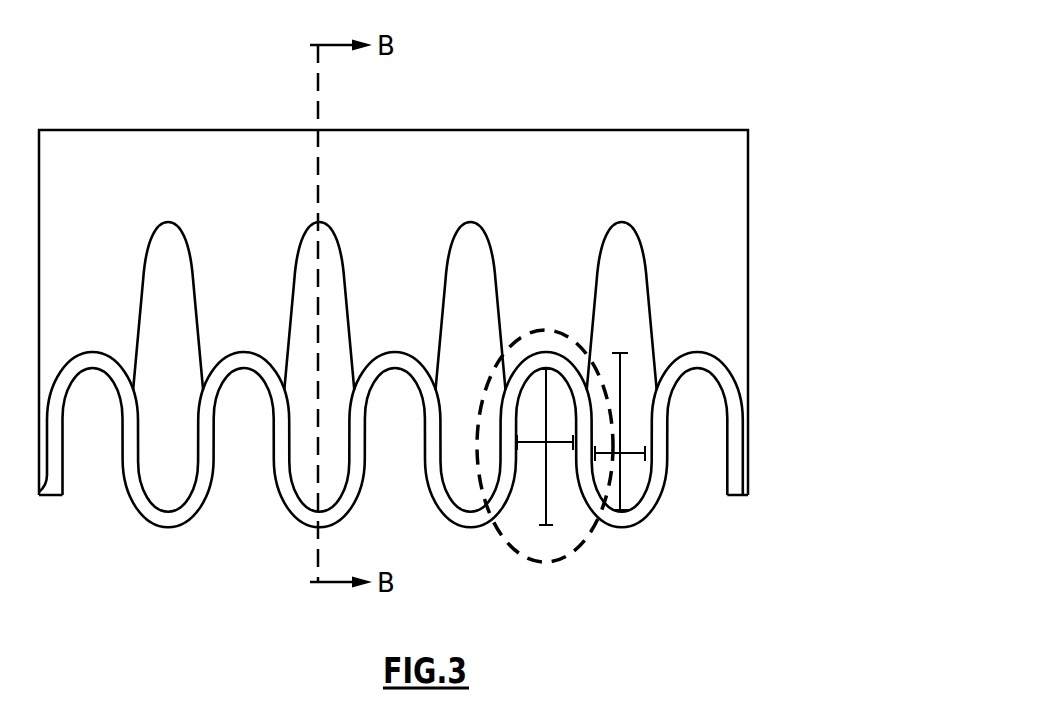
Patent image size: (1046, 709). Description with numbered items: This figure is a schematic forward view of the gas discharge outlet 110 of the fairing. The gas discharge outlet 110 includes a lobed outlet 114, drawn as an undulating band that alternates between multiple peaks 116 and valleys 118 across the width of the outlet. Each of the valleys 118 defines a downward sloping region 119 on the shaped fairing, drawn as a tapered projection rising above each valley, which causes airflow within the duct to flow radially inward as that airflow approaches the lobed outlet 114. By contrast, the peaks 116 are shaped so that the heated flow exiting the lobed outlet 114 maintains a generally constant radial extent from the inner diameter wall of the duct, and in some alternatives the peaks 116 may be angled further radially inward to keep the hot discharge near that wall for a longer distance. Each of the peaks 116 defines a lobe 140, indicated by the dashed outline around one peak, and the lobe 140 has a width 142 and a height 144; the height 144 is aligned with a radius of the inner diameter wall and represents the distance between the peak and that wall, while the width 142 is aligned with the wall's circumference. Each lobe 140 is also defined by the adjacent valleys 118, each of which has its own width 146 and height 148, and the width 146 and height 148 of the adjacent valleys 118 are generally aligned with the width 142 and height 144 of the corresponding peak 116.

The gas discharge outlet 110 is at (784, 128).
The lobed outlet 114 is at (787, 527).
The peaks 116 is at (727, 372).
The valleys 118 is at (635, 527).
The downward sloping region 119 is at (610, 279).
The lobe 140 is at (571, 338).
The width 142 is at (528, 443).
The height 144 is at (546, 502).
The width 146 is at (650, 508).
The height 148 is at (622, 378).